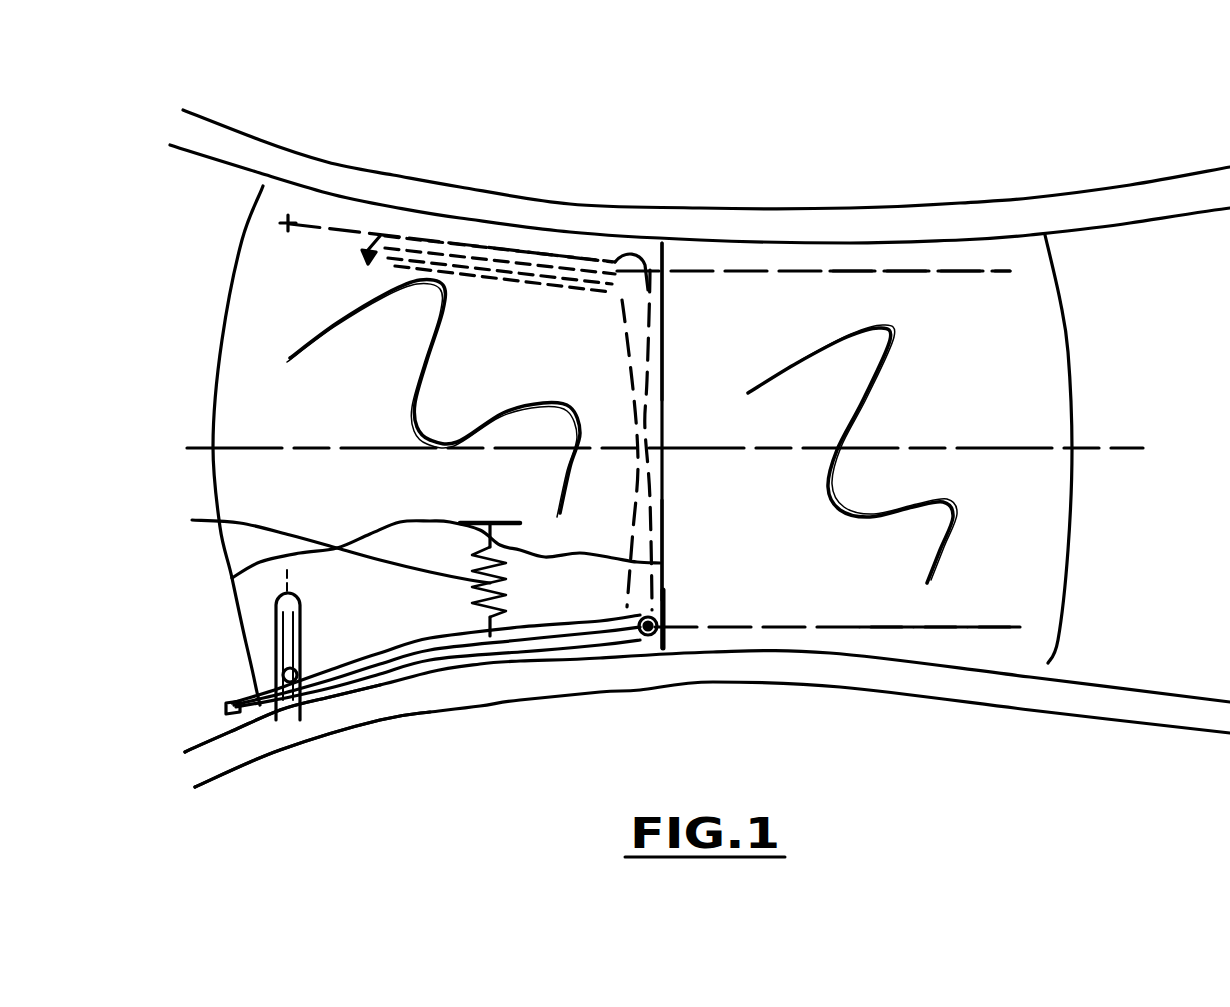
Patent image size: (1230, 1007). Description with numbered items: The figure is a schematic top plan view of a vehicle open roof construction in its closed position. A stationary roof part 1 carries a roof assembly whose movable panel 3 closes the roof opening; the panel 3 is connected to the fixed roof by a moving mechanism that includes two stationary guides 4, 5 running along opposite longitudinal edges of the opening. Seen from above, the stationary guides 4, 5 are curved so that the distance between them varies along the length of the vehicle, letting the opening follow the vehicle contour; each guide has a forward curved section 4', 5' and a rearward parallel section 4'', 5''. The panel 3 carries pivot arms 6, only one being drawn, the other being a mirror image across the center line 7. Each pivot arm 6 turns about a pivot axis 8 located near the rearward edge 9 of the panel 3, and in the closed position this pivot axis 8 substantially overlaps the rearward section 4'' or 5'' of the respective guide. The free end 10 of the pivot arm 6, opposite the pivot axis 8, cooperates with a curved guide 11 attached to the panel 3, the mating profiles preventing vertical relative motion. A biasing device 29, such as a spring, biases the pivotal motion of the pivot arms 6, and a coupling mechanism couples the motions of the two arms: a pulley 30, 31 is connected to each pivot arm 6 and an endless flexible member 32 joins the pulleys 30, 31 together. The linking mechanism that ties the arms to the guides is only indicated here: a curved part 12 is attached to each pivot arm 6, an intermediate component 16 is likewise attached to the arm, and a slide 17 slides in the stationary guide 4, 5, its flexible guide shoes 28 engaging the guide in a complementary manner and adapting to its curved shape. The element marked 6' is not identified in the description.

The stationary roof part 1 is at (955, 300).
The panel 3 is at (545, 303).
The stationary guide 4 is at (813, 181).
The forward curved section 4' is at (446, 178).
The rearward parallel section 4'' is at (916, 182).
The stationary guide 5 is at (837, 698).
The forward curved section 5' is at (707, 718).
The rearward parallel section 5'' is at (940, 695).
The pivot arm 6 is at (436, 696).
The upper flap strip 6' is at (500, 193).
The center line 7 is at (1068, 352).
The pivot axis 8 is at (630, 610).
The rearward edge 9 is at (663, 546).
The free end 10 is at (265, 700).
The curved guide 11 is at (280, 638).
The curved part 12 is at (367, 680).
The intermediate component 16 is at (282, 764).
The slide 17 is at (368, 262).
The flexible guide shoe 28 is at (372, 252).
The biasing device 29 is at (240, 523).
The pulley 30 is at (673, 597).
The pulley 31 is at (612, 262).
The endless flexible member 32 is at (662, 383).